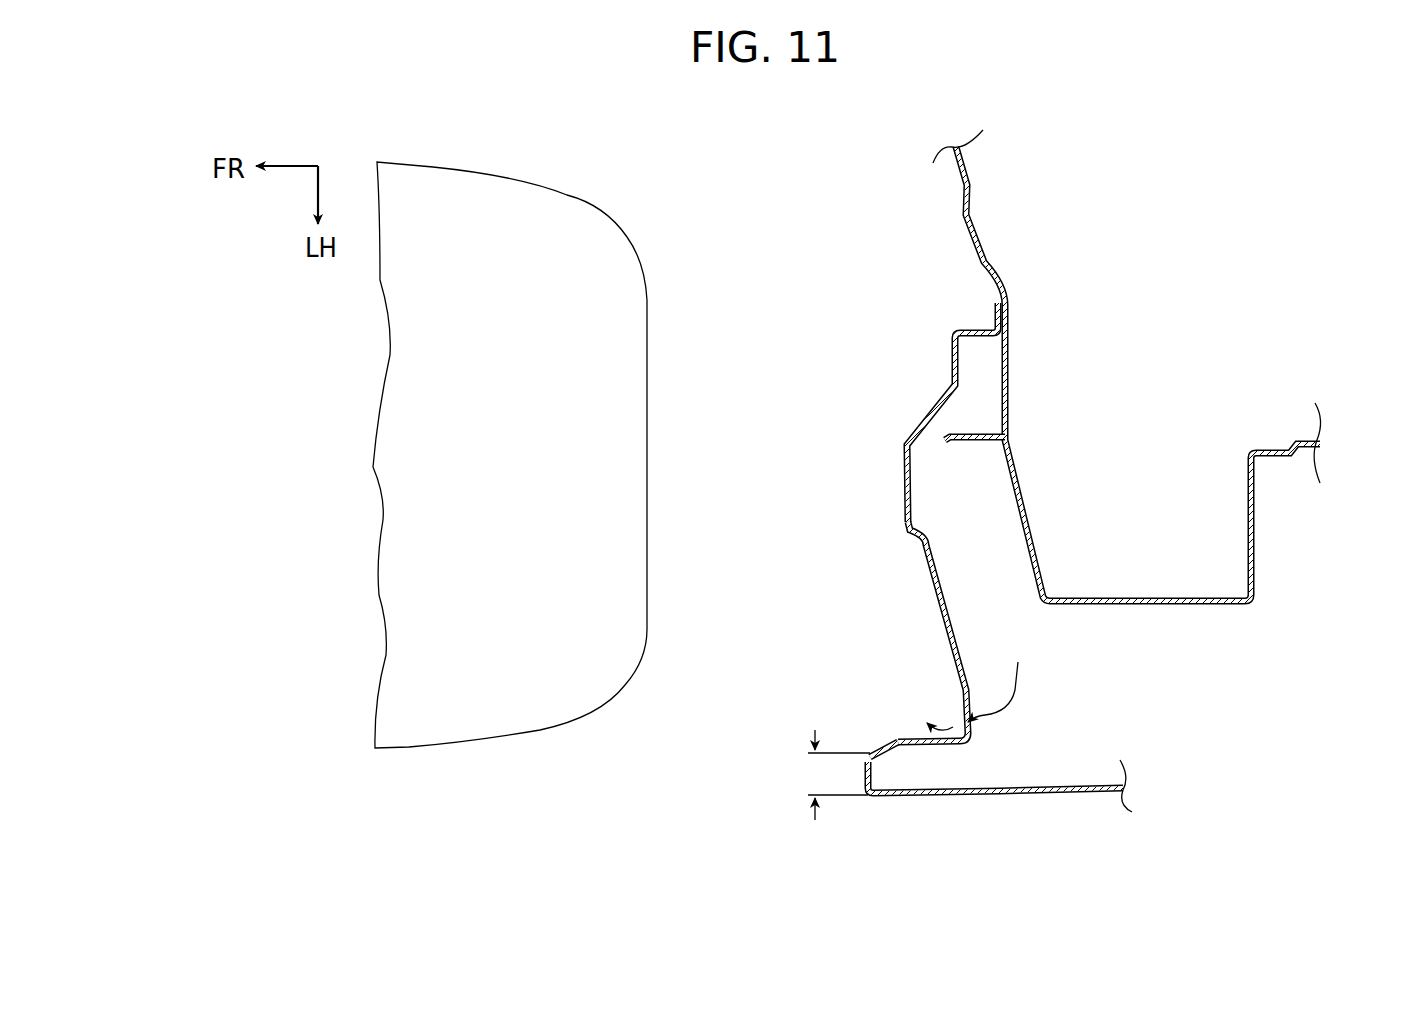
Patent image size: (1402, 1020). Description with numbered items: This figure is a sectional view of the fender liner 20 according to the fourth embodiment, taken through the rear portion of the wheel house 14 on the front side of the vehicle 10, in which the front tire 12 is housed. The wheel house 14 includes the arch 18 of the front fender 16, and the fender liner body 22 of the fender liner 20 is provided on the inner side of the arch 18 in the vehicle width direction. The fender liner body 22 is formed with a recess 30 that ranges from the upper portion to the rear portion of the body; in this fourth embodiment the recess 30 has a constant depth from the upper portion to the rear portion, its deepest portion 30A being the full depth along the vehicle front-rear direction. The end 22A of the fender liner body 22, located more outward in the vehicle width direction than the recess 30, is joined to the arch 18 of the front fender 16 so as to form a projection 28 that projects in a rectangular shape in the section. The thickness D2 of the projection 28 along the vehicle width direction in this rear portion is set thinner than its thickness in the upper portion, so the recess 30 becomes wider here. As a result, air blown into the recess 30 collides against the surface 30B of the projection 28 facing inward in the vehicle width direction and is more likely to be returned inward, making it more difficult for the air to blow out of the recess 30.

The vehicle 10 is at (979, 832).
The front tire 12 is at (528, 178).
The wheel house 14 is at (762, 654).
The front fender 16 is at (993, 797).
The arch 18 is at (885, 768).
The fender liner 20 is at (900, 494).
The fender liner body 22 is at (925, 563).
The end of the fender liner body 22A is at (872, 750).
The projection 28 is at (860, 800).
The recess 30 is at (1032, 678).
The deepest portion 30A is at (1032, 678).
The surface facing inward in the vehicle width direction 30B is at (920, 740).
The thickness of the projection in the rear portion D2 is at (815, 780).